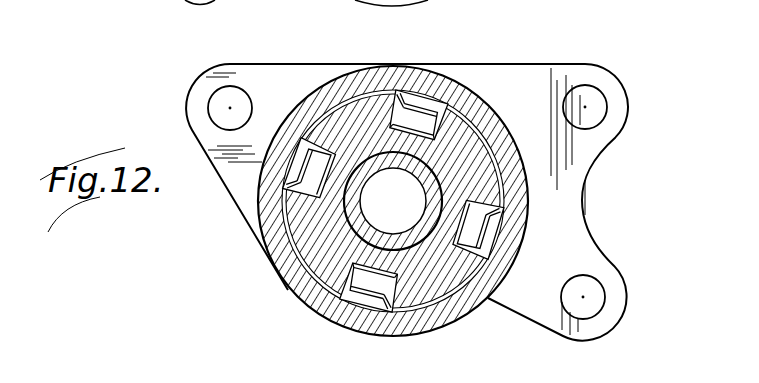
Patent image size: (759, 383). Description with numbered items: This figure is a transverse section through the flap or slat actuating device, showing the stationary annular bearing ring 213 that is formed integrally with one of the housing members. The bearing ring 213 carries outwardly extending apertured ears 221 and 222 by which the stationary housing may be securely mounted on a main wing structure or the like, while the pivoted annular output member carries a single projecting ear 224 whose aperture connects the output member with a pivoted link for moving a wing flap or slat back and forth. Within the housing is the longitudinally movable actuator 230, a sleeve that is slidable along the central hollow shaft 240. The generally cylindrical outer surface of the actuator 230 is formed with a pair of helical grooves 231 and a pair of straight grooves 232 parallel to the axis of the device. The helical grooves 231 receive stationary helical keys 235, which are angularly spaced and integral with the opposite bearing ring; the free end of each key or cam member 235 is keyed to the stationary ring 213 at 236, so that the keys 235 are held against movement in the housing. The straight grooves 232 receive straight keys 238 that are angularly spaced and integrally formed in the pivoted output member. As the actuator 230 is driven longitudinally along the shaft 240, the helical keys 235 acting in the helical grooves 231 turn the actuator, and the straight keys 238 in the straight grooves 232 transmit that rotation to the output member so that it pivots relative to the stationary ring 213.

The stationary annular bearing ring 213 is at (533, 83).
The apertured ear 221 is at (607, 88).
The apertured ear 222 is at (613, 282).
The projecting ear 224 is at (186, 97).
The actuator 230 is at (343, 117).
The helical groove 231 is at (267, 207).
The straight groove 232 is at (425, 92).
The helical key 235 is at (318, 145).
The keyed connection 236 is at (268, 172).
The straight key 238 is at (403, 97).
The central hollow shaft 240 is at (398, 232).